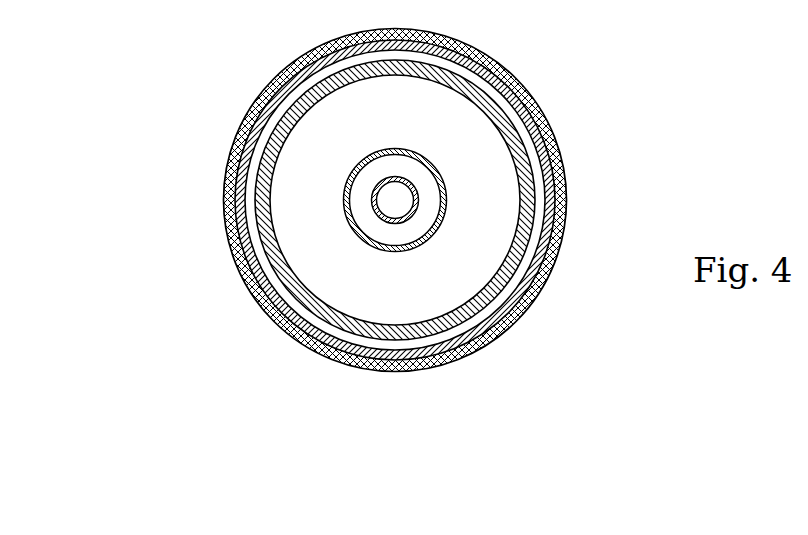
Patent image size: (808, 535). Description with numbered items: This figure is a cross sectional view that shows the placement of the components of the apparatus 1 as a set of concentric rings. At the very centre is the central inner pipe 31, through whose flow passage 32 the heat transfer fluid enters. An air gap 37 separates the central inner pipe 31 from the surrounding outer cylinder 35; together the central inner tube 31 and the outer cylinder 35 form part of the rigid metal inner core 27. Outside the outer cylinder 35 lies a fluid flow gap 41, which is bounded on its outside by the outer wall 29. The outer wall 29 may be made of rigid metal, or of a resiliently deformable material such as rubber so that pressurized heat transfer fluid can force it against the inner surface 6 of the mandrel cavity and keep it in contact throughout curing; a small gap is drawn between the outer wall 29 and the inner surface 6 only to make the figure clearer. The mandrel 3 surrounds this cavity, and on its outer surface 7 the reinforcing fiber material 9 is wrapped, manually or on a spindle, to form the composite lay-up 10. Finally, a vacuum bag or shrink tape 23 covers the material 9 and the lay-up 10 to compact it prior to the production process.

The apparatus 1 is at (553, 75).
The mandrel 3 is at (295, 67).
The inner surface of the mandrel cavity 6 is at (265, 125).
The mandrel external surface 7 is at (267, 150).
The reinforcing fiber material 9 is at (553, 172).
The composite lay-up 10 is at (555, 143).
The vacuum bag or shrink tape 23 is at (543, 282).
The inner core 27 is at (432, 232).
The outer wall 29 is at (268, 213).
The central inner pipe 31 is at (418, 190).
The flow passage 32 is at (403, 204).
The outer cylinder 35 is at (378, 153).
The air gap 37 is at (370, 176).
The fluid flow gap 41 is at (315, 237).